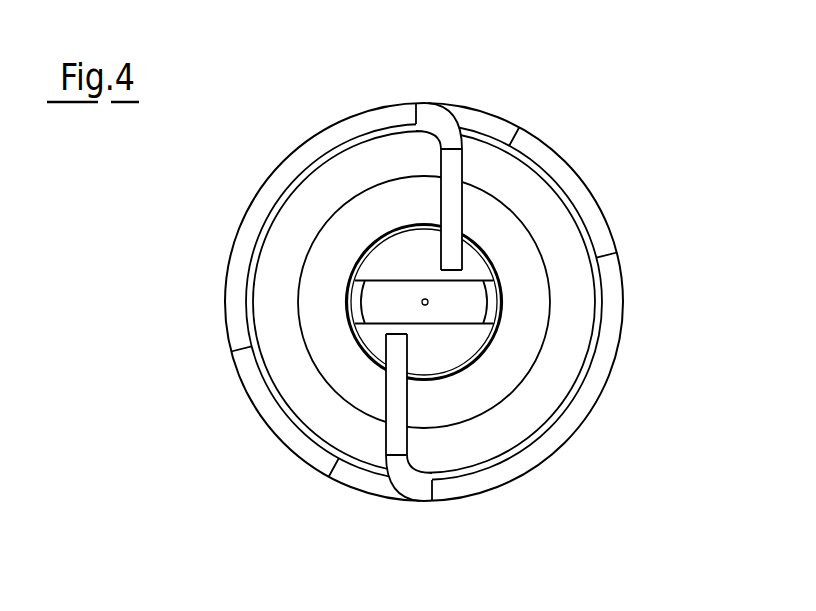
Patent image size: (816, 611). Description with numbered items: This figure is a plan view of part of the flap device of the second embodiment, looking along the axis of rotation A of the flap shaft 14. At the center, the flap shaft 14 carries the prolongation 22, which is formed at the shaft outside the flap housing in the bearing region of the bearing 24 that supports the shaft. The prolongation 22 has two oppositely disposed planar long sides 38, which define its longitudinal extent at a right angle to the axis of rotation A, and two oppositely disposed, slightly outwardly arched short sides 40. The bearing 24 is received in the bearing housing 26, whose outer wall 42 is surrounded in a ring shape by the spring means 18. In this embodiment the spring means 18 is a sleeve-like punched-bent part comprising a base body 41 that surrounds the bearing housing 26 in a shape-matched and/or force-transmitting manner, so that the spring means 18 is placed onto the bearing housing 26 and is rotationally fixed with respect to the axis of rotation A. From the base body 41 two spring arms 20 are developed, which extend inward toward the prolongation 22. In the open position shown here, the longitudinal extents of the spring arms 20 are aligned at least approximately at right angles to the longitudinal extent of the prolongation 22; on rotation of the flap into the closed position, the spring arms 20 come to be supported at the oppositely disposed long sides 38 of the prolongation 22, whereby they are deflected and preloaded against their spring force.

The flap shaft 14 is at (382, 337).
The spring means 18 is at (455, 167).
The spring arm 20 is at (415, 306).
The prolongation 22 is at (364, 294).
The bearing 24 is at (513, 243).
The bearing housing 26 is at (568, 238).
The long sides 38 is at (420, 279).
The short sides 40 is at (350, 316).
The base body 41 is at (621, 274).
The outer wall 42 is at (463, 501).
The axis of rotation A is at (423, 300).